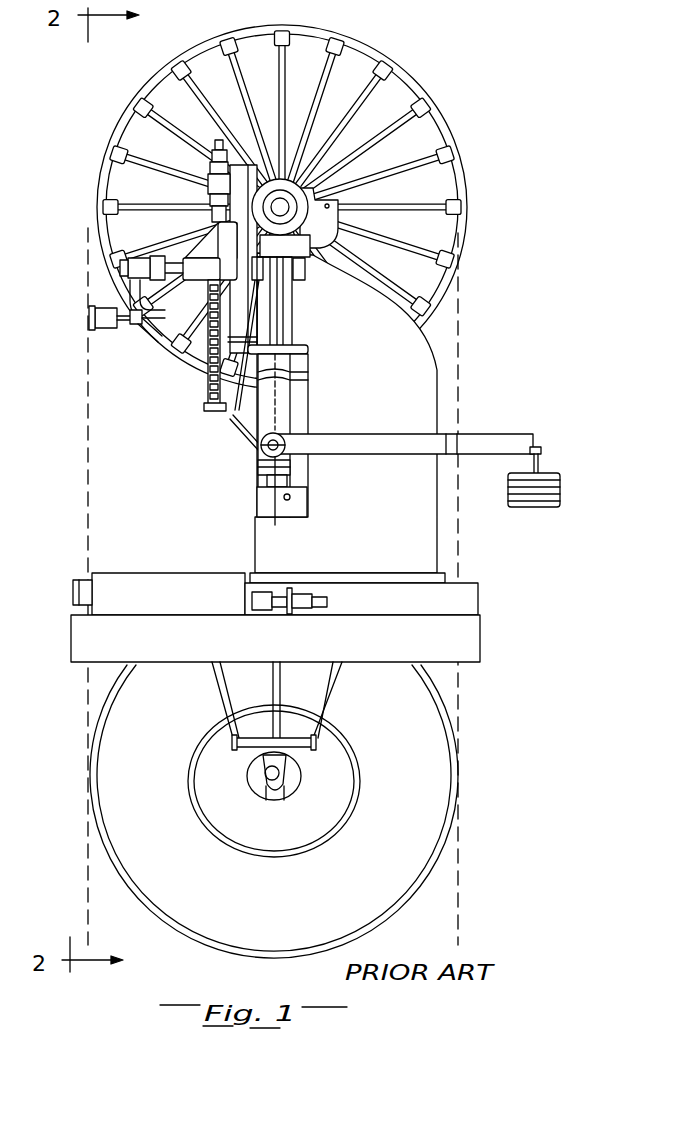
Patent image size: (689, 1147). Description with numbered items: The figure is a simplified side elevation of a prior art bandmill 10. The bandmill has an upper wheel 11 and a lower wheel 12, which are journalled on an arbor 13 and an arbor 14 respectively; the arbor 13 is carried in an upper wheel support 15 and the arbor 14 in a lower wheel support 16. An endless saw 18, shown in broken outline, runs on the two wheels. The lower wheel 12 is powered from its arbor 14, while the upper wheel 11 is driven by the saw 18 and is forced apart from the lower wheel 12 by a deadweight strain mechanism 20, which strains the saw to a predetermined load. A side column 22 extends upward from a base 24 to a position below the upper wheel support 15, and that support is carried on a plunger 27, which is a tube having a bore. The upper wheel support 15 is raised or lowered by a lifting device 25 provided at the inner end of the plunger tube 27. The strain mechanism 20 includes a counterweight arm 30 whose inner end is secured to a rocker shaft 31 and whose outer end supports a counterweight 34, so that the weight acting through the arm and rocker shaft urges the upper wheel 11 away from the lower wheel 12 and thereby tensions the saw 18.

The bandmill 10 is at (494, 190).
The upper wheel 11 is at (103, 172).
The lower wheel 12 is at (136, 891).
The arbor 13 is at (282, 206).
The arbor 14 is at (285, 775).
The upper wheel support 15 is at (315, 258).
The lower wheel support 16 is at (318, 693).
The endless saw 18 is at (88, 490).
The deadweight strain mechanism 20 is at (436, 450).
The side column 22 is at (380, 347).
The base 24 is at (204, 652).
The lifting device 25 is at (262, 494).
The plunger 27 is at (294, 370).
The counterweight arm 30 is at (377, 443).
The rocker shaft 31 is at (295, 456).
The counterweight 34 is at (560, 474).